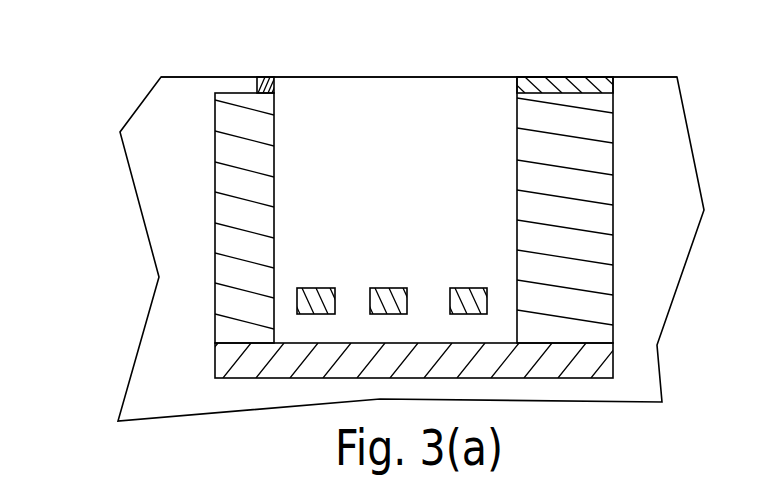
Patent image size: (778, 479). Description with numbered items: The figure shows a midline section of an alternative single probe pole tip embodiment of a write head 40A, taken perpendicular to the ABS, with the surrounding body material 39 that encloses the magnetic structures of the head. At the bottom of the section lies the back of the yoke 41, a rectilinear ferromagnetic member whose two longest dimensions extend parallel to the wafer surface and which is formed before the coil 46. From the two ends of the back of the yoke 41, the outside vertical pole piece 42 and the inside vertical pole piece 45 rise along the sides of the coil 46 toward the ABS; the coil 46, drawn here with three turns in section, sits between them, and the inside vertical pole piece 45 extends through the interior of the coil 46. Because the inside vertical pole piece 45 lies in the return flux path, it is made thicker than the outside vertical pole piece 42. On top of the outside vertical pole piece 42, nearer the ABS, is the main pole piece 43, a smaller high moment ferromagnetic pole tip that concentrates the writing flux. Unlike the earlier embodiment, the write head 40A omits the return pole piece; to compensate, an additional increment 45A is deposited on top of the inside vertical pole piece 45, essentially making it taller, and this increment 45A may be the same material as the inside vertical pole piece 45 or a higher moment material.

The write head 40A is at (104, 96).
The body material 39 is at (652, 253).
The back of the yoke 41 is at (252, 362).
The outside vertical pole piece 42 is at (245, 186).
The main pole piece 43 is at (262, 80).
The inside vertical pole piece 45 is at (577, 154).
The additional increment 45A is at (520, 86).
The coil 46 is at (455, 292).
The air bearing surface ABS is at (660, 67).